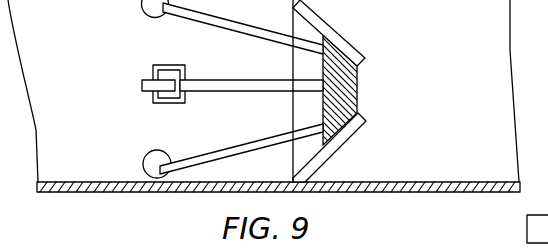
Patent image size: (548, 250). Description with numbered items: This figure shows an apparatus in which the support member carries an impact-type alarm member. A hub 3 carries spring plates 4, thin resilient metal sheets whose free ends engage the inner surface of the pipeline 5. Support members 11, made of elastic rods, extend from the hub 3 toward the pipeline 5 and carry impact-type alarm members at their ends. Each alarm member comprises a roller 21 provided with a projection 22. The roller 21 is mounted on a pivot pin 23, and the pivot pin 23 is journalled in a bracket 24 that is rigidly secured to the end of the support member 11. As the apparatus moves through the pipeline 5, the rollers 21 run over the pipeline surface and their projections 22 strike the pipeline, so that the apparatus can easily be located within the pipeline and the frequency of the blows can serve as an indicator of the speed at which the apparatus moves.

The pipeline 5 is at (69, 1).
The support member 11 is at (237, 30).
The spring plate 4 is at (326, 22).
The hub 3 is at (358, 72).
The pivot pin 23 is at (153, 95).
The bracket 24 is at (172, 103).
The roller 21 is at (150, 153).
The projection 22 is at (155, 169).